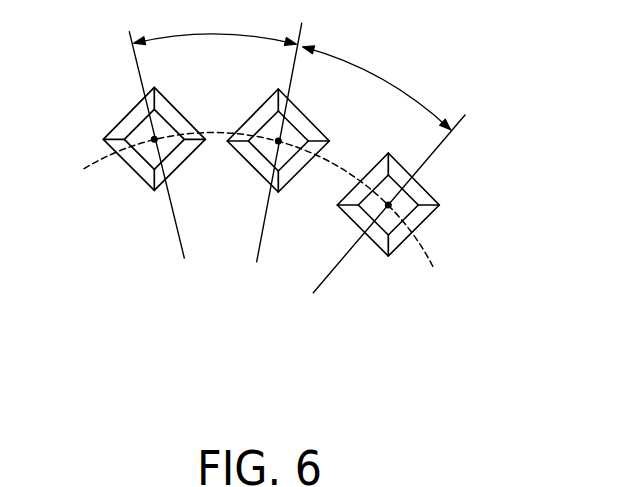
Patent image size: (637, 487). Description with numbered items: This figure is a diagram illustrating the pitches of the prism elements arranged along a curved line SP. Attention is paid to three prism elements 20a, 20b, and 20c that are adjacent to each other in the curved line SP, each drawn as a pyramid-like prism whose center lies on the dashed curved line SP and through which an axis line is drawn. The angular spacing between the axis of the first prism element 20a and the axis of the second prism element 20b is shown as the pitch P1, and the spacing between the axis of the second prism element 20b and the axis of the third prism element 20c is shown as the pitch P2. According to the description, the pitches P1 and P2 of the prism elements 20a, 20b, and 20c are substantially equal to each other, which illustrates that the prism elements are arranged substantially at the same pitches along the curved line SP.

The prism element 20a is at (133, 167).
The prism element 20b is at (252, 160).
The prism element 20c is at (398, 248).
The curved line SP is at (423, 248).
The pitch P1 is at (215, 24).
The pitch P2 is at (377, 88).